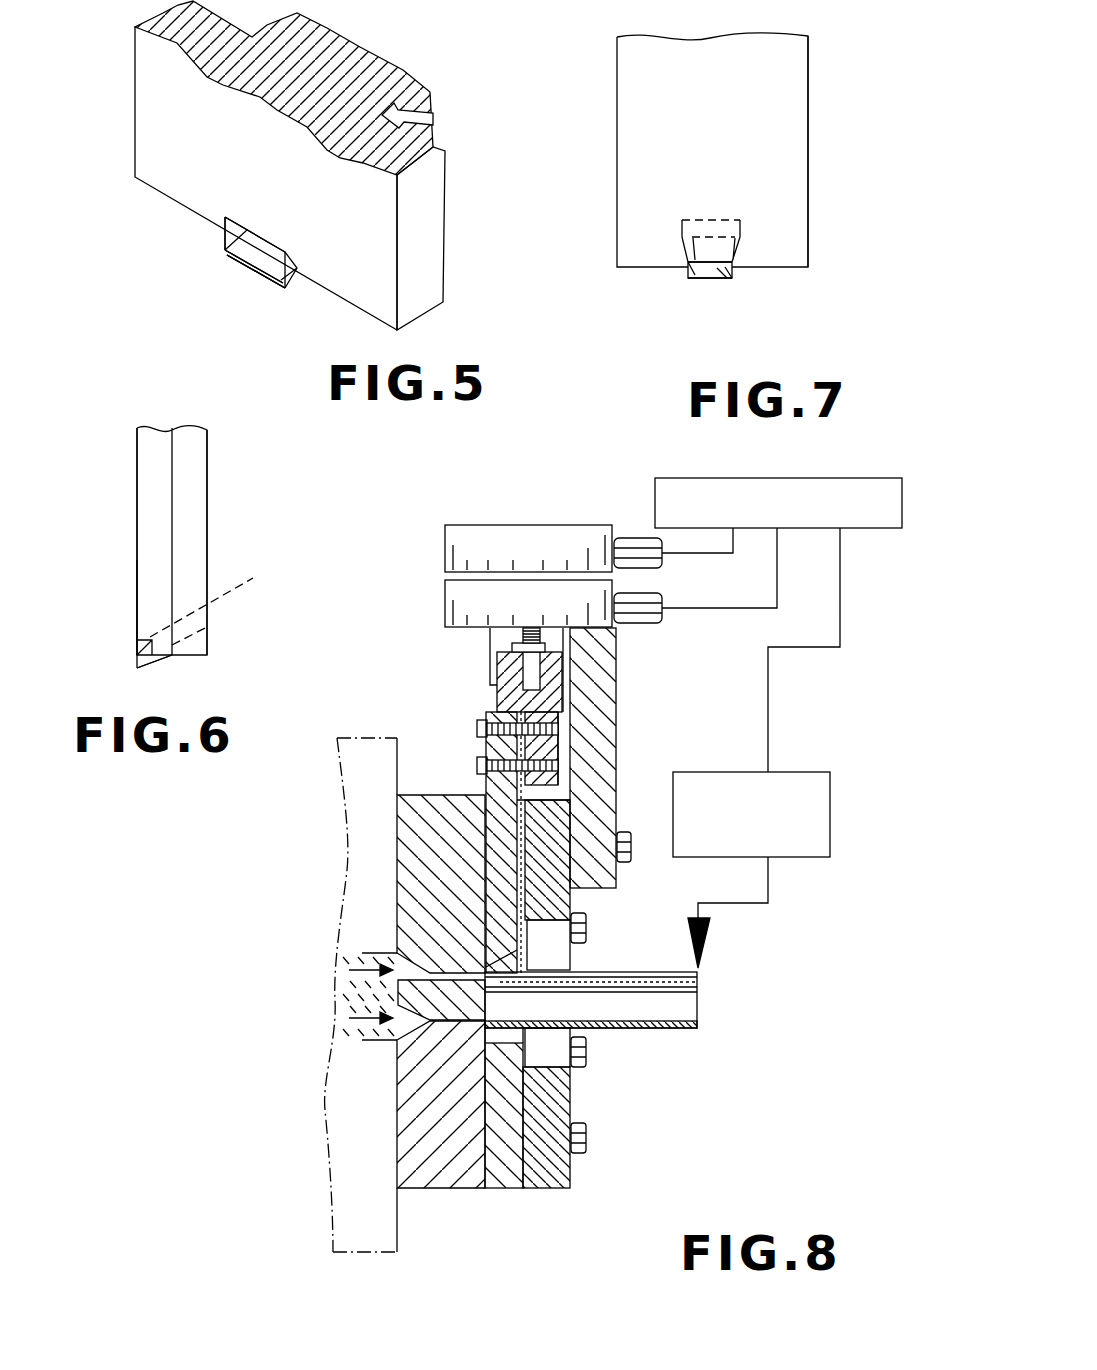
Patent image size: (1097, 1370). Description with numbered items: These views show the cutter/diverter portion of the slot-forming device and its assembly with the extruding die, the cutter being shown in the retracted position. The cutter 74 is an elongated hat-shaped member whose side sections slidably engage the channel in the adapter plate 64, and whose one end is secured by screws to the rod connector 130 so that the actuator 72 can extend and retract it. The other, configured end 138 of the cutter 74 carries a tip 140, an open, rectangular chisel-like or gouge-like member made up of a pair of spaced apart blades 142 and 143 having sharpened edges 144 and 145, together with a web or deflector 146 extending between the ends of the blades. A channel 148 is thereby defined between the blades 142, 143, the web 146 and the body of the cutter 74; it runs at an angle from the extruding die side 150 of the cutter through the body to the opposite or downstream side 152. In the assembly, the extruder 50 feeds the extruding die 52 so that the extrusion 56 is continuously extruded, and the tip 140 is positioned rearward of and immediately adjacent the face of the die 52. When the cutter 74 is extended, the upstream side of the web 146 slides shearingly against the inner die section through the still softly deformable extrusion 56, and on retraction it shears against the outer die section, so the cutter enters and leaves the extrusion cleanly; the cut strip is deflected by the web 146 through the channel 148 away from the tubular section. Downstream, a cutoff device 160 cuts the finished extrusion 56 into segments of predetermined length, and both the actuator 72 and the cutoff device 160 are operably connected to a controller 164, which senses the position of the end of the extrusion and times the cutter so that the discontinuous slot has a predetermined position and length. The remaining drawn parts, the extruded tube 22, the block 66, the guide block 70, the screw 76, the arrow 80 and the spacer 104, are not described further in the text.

In FIG. 8, the tube 22 is at (698, 1003).
In FIG. 8, the extruder 50 is at (367, 1256).
In FIG. 8, the extruding die 52 is at (437, 1190).
In FIG. 8, the extrusion 56 is at (665, 1028).
In FIG. 8, the adapter plate 64 is at (503, 1190).
In FIG. 8, the clamp block 66 is at (545, 1190).
In FIG. 8, the guide block 70 is at (618, 713).
In FIG. 8, the actuator 72 is at (527, 525).
In FIG. 5, the cutter 74 is at (368, 38).
In FIG. 6, the cutter 74 is at (118, 462).
In FIG. 7, the cutter 74 is at (829, 102).
In FIG. 8, the cutter 74 is at (487, 790).
In FIG. 8, the adjusting screw 76 is at (523, 672).
In FIG. 5, the strip feed direction 80 is at (436, 116).
In FIG. 8, the spacer 104 is at (548, 1053).
In FIG. 8, the rod connector 130 is at (497, 698).
In FIG. 5, the configured end 138 is at (450, 263).
In FIG. 6, the configured end 138 is at (126, 589).
In FIG. 7, the configured end 138 is at (810, 200).
In FIG. 5, the tip 140 is at (212, 265).
In FIG. 6, the tip 140 is at (183, 657).
In FIG. 7, the tip 140 is at (690, 290).
In FIG. 8, the tip 140 is at (500, 973).
In FIG. 5, the blade 142 is at (240, 233).
In FIG. 7, the blade 142 is at (688, 273).
In FIG. 5, the blade 143 is at (290, 273).
In FIG. 7, the blade 143 is at (725, 275).
In FIG. 5, the sharpened edge 144 is at (223, 235).
In FIG. 5, the sharpened edge 145 is at (267, 283).
In FIG. 5, the web 146 is at (255, 273).
In FIG. 6, the web 146 is at (138, 670).
In FIG. 7, the web 146 is at (703, 280).
In FIG. 5, the channel 148 is at (260, 247).
In FIG. 6, the channel 148 is at (223, 593).
In FIG. 7, the channel 148 is at (723, 280).
In FIG. 5, the extruding die side 150 is at (157, 117).
In FIG. 6, the extruding die side 150 is at (135, 612).
In FIG. 5, the downstream side 152 is at (450, 197).
In FIG. 6, the downstream side 152 is at (207, 480).
In FIG. 8, the cutoff device 160 is at (805, 772).
In FIG. 8, the controller 164 is at (655, 500).